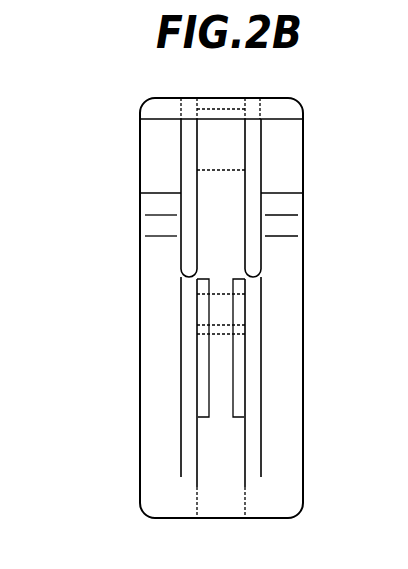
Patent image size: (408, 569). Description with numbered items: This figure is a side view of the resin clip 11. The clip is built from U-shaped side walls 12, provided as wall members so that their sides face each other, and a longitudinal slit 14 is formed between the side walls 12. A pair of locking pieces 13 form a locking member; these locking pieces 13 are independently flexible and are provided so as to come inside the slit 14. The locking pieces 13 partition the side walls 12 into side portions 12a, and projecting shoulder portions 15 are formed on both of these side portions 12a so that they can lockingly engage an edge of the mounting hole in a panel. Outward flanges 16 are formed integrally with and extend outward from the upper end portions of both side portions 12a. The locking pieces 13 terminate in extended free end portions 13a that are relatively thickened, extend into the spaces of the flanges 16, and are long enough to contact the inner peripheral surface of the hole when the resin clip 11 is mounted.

The resin clip 11 is at (130, 264).
The side walls 12 is at (230, 450).
The side portions 12a is at (160, 342).
The locking pieces 13 is at (225, 253).
The free end portions 13a is at (220, 132).
The slit 14 is at (190, 162).
The projecting shoulder portions 15 is at (163, 215).
The outward flanges 16 is at (163, 107).